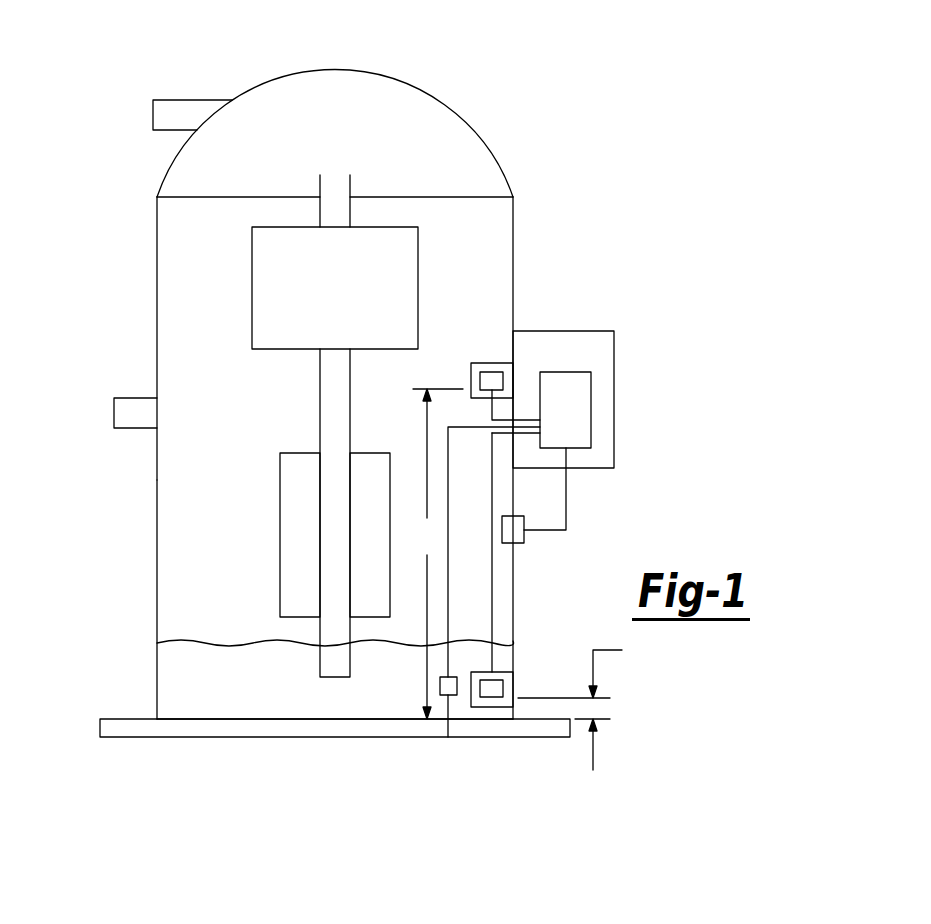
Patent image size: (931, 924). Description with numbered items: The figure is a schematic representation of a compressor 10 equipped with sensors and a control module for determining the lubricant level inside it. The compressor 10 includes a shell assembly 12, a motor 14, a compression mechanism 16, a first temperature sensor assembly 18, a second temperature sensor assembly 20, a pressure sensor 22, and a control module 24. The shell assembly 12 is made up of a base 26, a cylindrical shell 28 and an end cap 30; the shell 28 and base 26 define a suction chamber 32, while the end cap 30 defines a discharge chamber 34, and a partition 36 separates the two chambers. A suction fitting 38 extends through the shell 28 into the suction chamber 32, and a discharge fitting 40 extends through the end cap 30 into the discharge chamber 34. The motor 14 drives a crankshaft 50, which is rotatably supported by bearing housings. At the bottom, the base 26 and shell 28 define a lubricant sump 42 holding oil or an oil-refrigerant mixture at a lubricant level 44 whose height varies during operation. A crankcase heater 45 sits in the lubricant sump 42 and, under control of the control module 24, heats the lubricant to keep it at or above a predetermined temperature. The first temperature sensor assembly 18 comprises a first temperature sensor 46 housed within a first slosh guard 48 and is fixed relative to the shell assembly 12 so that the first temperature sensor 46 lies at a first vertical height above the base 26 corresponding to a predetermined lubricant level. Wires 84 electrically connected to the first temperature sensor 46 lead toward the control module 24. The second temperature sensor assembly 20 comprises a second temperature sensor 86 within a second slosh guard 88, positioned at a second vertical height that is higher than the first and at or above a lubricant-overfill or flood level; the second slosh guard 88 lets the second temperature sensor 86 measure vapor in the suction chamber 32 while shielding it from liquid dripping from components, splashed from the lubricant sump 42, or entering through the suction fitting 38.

The compressor 10 is at (522, 44).
The shell assembly 12 is at (148, 500).
The motor 14 is at (283, 487).
The compression mechanism 16 is at (252, 292).
The first temperature sensor assembly 18 is at (491, 718).
The second temperature sensor assembly 20 is at (466, 348).
The pressure sensor 22 is at (524, 541).
The control module 24 is at (583, 394).
The base 26 is at (120, 740).
The cylindrical shell 28 is at (157, 543).
The end cap 30 is at (340, 70).
The suction chamber 32 is at (192, 370).
The discharge chamber 34 is at (457, 152).
The partition 36 is at (230, 197).
The suction fitting 38 is at (114, 416).
The discharge fitting 40 is at (163, 100).
The lubricant sump 42 is at (275, 732).
The lubricant level 44 is at (183, 648).
The crankcase heater 45 is at (448, 737).
The first temperature sensor 46 is at (503, 690).
The first slosh guard 48 is at (500, 668).
The crankshaft 50 is at (320, 412).
The wires 84 is at (495, 484).
The second temperature sensor 86 is at (503, 383).
The second slosh guard 88 is at (493, 363).